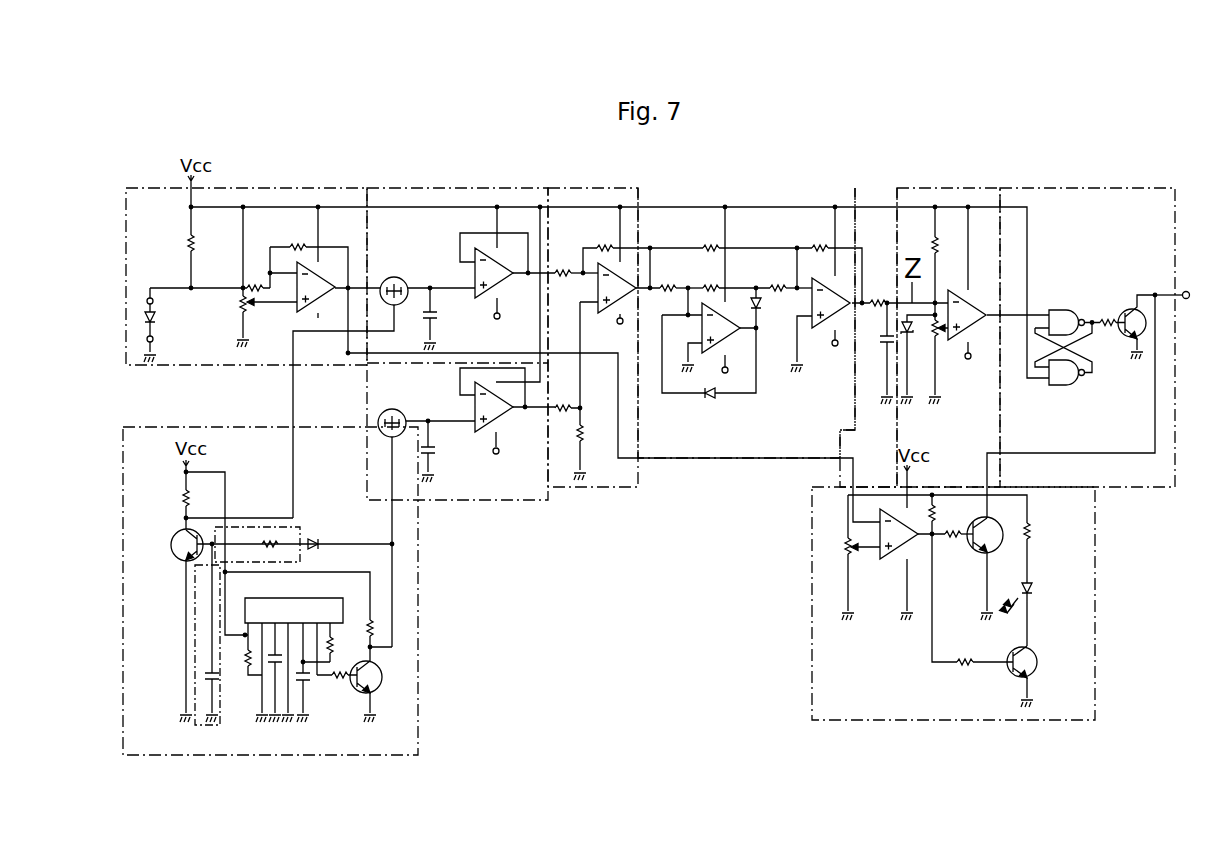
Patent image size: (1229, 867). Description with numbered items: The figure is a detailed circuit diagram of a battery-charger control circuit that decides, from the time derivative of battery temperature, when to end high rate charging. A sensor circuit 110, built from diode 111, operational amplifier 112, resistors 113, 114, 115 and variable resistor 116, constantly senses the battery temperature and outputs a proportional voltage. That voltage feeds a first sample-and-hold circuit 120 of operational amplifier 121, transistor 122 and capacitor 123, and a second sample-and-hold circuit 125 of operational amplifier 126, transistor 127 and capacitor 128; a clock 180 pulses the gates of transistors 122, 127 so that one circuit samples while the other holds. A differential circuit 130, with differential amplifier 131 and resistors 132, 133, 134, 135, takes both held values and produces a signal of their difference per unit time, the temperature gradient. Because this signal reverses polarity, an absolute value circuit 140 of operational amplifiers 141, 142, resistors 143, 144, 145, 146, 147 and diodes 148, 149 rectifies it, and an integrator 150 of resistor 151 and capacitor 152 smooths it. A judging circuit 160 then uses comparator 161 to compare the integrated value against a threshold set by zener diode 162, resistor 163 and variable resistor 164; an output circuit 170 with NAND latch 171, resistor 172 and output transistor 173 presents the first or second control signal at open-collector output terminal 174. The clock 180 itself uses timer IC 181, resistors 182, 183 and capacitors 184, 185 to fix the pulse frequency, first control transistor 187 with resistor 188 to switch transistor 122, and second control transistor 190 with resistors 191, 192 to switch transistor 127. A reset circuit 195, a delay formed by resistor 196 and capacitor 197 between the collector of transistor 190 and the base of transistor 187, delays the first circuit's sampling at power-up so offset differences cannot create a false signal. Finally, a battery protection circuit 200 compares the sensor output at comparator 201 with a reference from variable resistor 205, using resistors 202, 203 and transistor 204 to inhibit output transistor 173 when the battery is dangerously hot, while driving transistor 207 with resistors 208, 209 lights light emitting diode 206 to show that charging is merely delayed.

The sensor circuit 110 is at (250, 188).
The diode 111 is at (157, 321).
The operational amplifier 112 is at (293, 312).
The resistor 113 is at (188, 244).
The resistor 114 is at (253, 283).
The resistor 115 is at (294, 245).
The variable resistor 116 is at (241, 302).
The first sample-and-hold circuit 120 is at (448, 188).
The operational amplifier 121 is at (472, 271).
The transistor 122 is at (394, 277).
The capacitor 123 is at (433, 313).
The second sample-and-hold circuit 125 is at (500, 507).
The operational amplifier 126 is at (472, 404).
The transistor 127 is at (392, 409).
The capacitor 128 is at (432, 452).
The differential circuit 130 is at (598, 188).
The differential amplifier 131 is at (598, 308).
The resistor 132 is at (563, 270).
The resistor 133 is at (603, 246).
The resistor 134 is at (568, 407).
The resistor 135 is at (583, 442).
The absolute value circuit 140 is at (735, 188).
The operational amplifier 141 is at (709, 300).
The operational amplifier 142 is at (813, 340).
The resistor 143 is at (668, 285).
The resistor 144 is at (726, 271).
The resistor 145 is at (781, 271).
The resistor 146 is at (731, 233).
The resistor 147 is at (818, 246).
The diode 148 is at (709, 398).
The diode 149 is at (758, 312).
The integrator 150 is at (885, 188).
The resistor 151 is at (878, 300).
The capacitor 152 is at (881, 350).
The judging circuit 160 is at (957, 188).
The comparator 161 is at (955, 302).
The zener diode 162 is at (909, 346).
The resistor 163 is at (955, 256).
The variable resistor 164 is at (939, 338).
The output circuit 170 is at (1085, 188).
The NAND latch 171 is at (1059, 309).
The resistor 172 is at (1110, 320).
The output transistor 173 is at (1125, 337).
The output terminal 174 is at (1187, 300).
The clock 180 is at (421, 634).
The timer IC 181 is at (292, 598).
The resistor 182 is at (335, 650).
The resistor 183 is at (250, 620).
The capacitor 184 is at (308, 686).
The capacitor 185 is at (268, 705).
The first control transistor 187 is at (172, 553).
The resistor 188 is at (184, 499).
The second control transistor 190 is at (384, 685).
The resistor 191 is at (368, 622).
The resistor 192 is at (339, 683).
The reset circuit 195 is at (194, 640).
The resistor 196 is at (276, 540).
The capacitor 197 is at (215, 680).
The battery protection circuit 200 is at (810, 632).
The comparator 201 is at (883, 558).
The resistor 202 is at (933, 508).
The resistor 203 is at (953, 536).
The transistor 204 is at (976, 555).
The variable resistor 205 is at (843, 549).
The light emitting diode 206 is at (1032, 589).
The driving transistor 207 is at (1037, 659).
The resistor 208 is at (1031, 531).
The resistor 209 is at (963, 668).